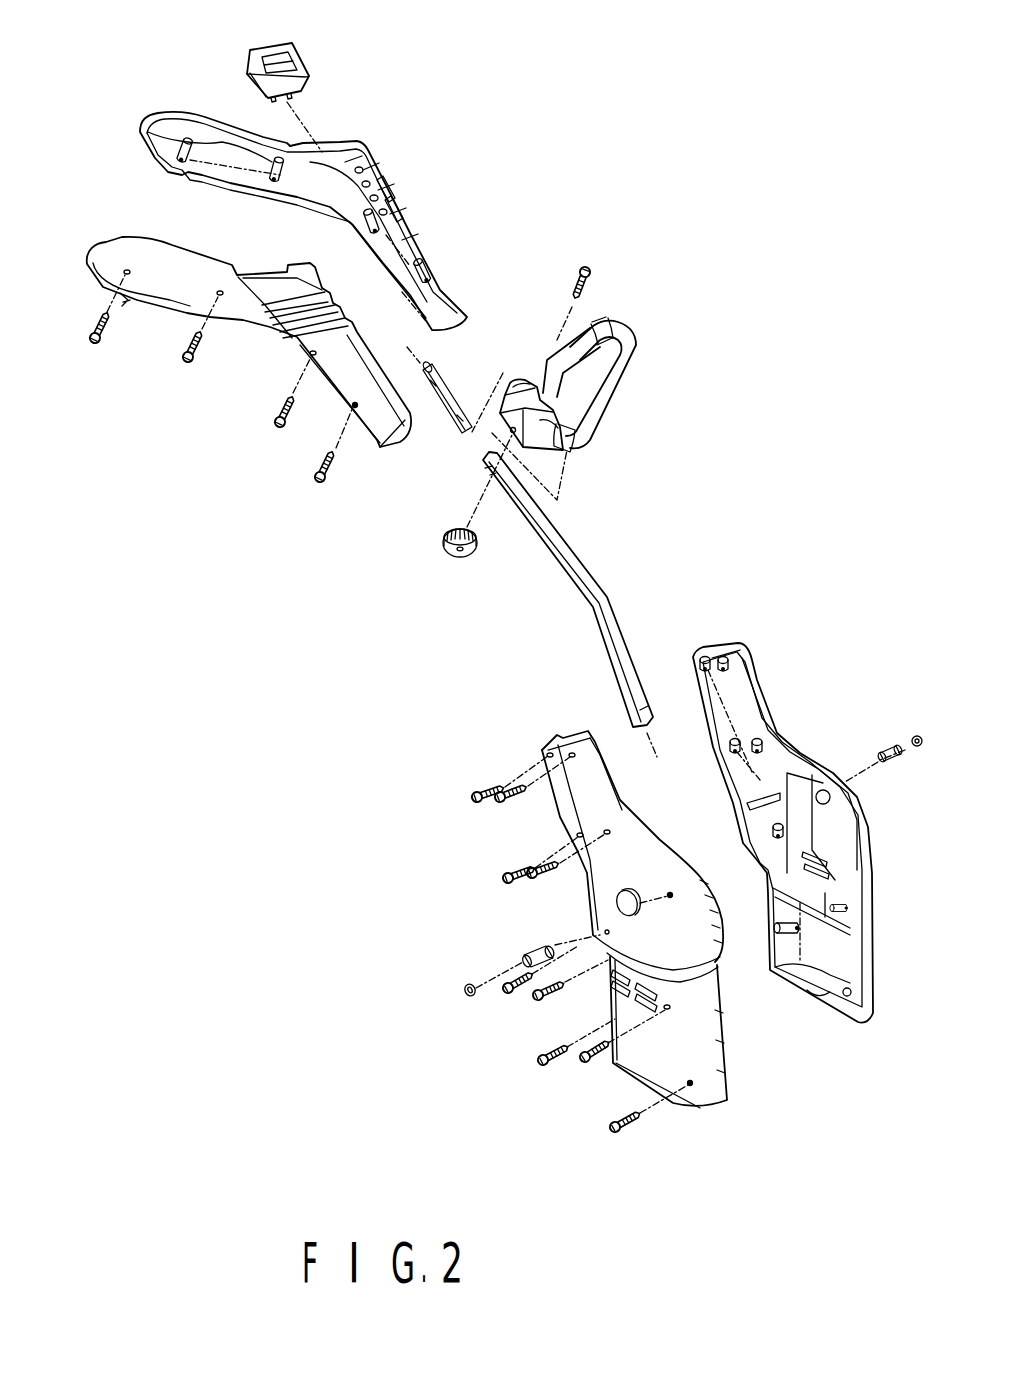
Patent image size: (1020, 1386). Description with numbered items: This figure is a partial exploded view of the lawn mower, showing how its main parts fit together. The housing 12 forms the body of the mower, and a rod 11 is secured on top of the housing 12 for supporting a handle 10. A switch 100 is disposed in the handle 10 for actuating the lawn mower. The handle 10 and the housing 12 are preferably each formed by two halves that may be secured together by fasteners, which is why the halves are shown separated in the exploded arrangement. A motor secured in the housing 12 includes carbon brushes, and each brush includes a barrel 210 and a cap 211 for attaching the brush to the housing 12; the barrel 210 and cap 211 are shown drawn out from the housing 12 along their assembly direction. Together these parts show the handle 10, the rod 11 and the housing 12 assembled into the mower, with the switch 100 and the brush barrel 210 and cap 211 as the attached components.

The switch 100 is at (272, 51).
The handle 10 is at (423, 242).
The rod 11 is at (556, 539).
The housing 12 is at (761, 712).
The barrel 210 is at (530, 951).
The cap 211 is at (468, 1001).